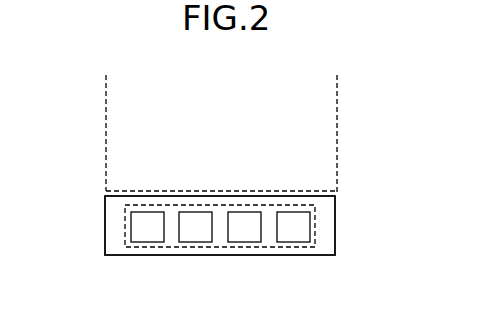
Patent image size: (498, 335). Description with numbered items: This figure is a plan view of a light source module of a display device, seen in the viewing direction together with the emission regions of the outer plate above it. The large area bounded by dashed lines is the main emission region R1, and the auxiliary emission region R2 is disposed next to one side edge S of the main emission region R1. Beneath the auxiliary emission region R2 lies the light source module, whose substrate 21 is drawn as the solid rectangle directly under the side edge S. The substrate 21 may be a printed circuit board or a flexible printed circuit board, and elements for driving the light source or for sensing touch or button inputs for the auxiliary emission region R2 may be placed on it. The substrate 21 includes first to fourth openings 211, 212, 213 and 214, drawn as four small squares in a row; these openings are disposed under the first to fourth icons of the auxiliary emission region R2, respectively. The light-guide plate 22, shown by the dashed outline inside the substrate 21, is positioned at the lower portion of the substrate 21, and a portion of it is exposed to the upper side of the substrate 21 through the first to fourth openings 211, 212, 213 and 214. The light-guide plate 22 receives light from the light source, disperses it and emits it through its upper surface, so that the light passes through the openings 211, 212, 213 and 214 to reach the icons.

The substrate 21 is at (106, 215).
The light-guide plate 22 is at (188, 256).
The first opening 211 is at (147, 242).
The second opening 212 is at (196, 242).
The third opening 213 is at (245, 242).
The fourth opening 214 is at (294, 242).
The main emission region R1 is at (327, 110).
The auxiliary emission region R2 is at (316, 230).
The side edge S is at (312, 191).